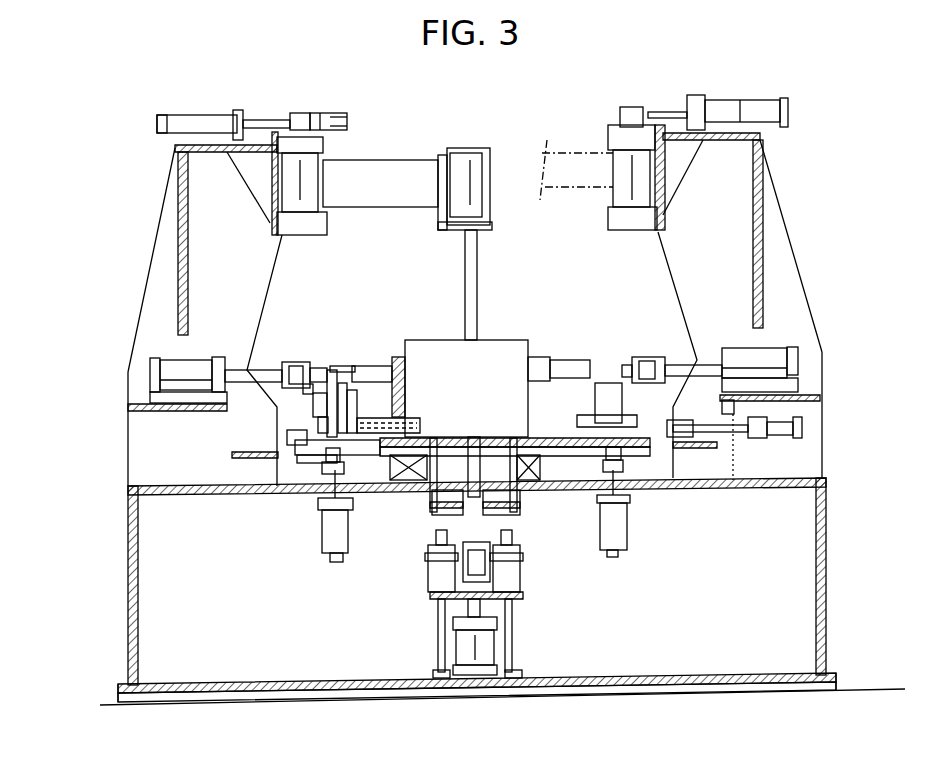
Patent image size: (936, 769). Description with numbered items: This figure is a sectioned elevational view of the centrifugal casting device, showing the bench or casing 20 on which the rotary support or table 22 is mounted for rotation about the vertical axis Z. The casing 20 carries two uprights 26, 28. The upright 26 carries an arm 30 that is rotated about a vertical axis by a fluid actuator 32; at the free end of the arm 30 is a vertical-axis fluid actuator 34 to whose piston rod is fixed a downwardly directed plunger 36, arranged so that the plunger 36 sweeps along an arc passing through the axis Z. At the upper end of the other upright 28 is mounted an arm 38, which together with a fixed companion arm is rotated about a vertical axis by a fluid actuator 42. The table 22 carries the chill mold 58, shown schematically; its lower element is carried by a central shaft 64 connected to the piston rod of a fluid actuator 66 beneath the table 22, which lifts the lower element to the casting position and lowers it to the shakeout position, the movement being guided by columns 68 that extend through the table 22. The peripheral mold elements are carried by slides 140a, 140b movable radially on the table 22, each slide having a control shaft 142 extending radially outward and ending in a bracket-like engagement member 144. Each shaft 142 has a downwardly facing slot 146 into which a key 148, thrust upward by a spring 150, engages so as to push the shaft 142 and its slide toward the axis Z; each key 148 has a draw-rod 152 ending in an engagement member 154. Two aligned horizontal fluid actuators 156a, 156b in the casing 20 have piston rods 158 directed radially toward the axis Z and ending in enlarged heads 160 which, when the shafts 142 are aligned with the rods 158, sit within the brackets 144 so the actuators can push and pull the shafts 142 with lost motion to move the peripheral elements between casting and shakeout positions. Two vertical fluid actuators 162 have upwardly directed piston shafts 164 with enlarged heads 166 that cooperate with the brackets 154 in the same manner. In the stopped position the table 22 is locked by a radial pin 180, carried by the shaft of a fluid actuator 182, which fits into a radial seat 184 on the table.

The casing 20 is at (128, 580).
The rotary support or table 22 is at (543, 495).
The upright 26 is at (181, 178).
The upright 28 is at (768, 150).
The arm 30 is at (390, 170).
The fluid actuator 32 is at (210, 118).
The fluid actuator 34 is at (495, 170).
The plunger 36 is at (465, 276).
The arm 38 is at (565, 160).
The fluid actuator 42 is at (722, 108).
The chill mold 58 is at (500, 362).
The central shaft 64 is at (440, 600).
The fluid actuator 66 is at (480, 646).
The columns 68 is at (440, 440).
The slide 140a is at (415, 490).
The slide 140b is at (522, 540).
The control shaft 142 is at (375, 372).
The engagement member 144 is at (290, 362).
The slot 146 is at (332, 372).
The key 148 is at (323, 395).
The spring 150 is at (350, 415).
The draw-rod 152 is at (318, 466).
The engagement member 154 is at (345, 462).
The fluid actuator 156a is at (170, 380).
The fluid actuator 156b is at (768, 360).
The piston rod 158 is at (240, 372).
The enlarged head 160 is at (283, 388).
The fluid actuator 162 is at (330, 555).
The piston shaft 164 is at (325, 520).
The enlarged head 166 is at (590, 500).
The radial pin 180 is at (733, 480).
The fluid actuator 182 is at (790, 440).
The radial seat 184 is at (295, 458).